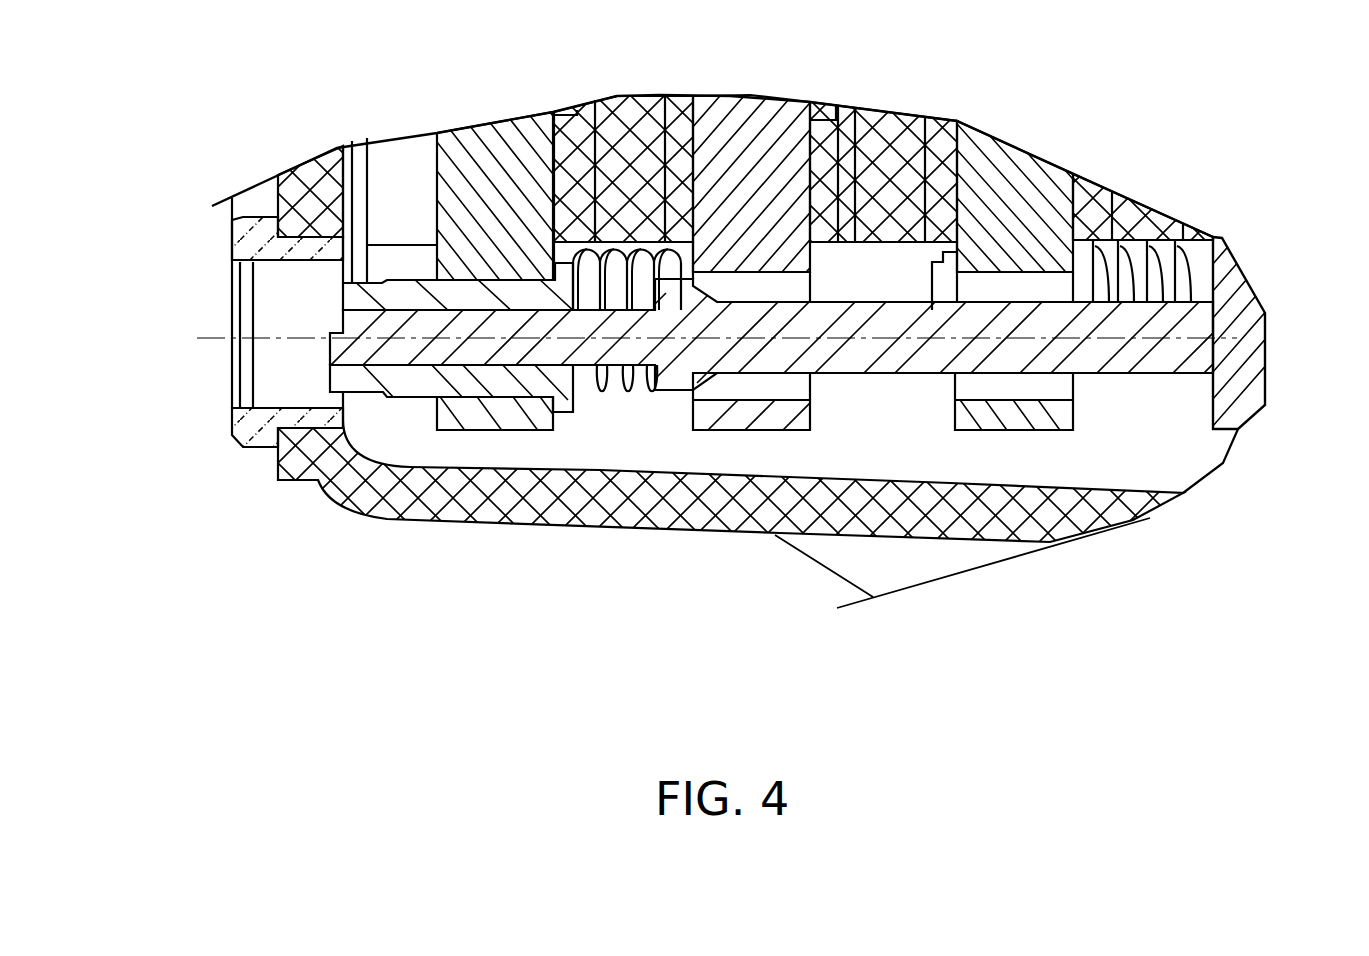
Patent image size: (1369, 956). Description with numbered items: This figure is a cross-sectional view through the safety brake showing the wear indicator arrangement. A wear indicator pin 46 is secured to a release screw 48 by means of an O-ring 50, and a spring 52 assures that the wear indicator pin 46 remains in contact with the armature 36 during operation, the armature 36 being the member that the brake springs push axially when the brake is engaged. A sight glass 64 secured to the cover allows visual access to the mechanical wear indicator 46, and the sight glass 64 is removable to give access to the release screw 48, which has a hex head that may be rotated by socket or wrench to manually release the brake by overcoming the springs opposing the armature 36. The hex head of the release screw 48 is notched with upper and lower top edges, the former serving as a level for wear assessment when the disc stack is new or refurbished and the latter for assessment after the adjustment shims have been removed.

The armature 36 is at (1236, 302).
The wear indicator pin 46 is at (883, 368).
The release screw 48 is at (398, 395).
The O-ring 50 is at (448, 358).
The spring 52 is at (618, 397).
The sight glass 64 is at (283, 375).